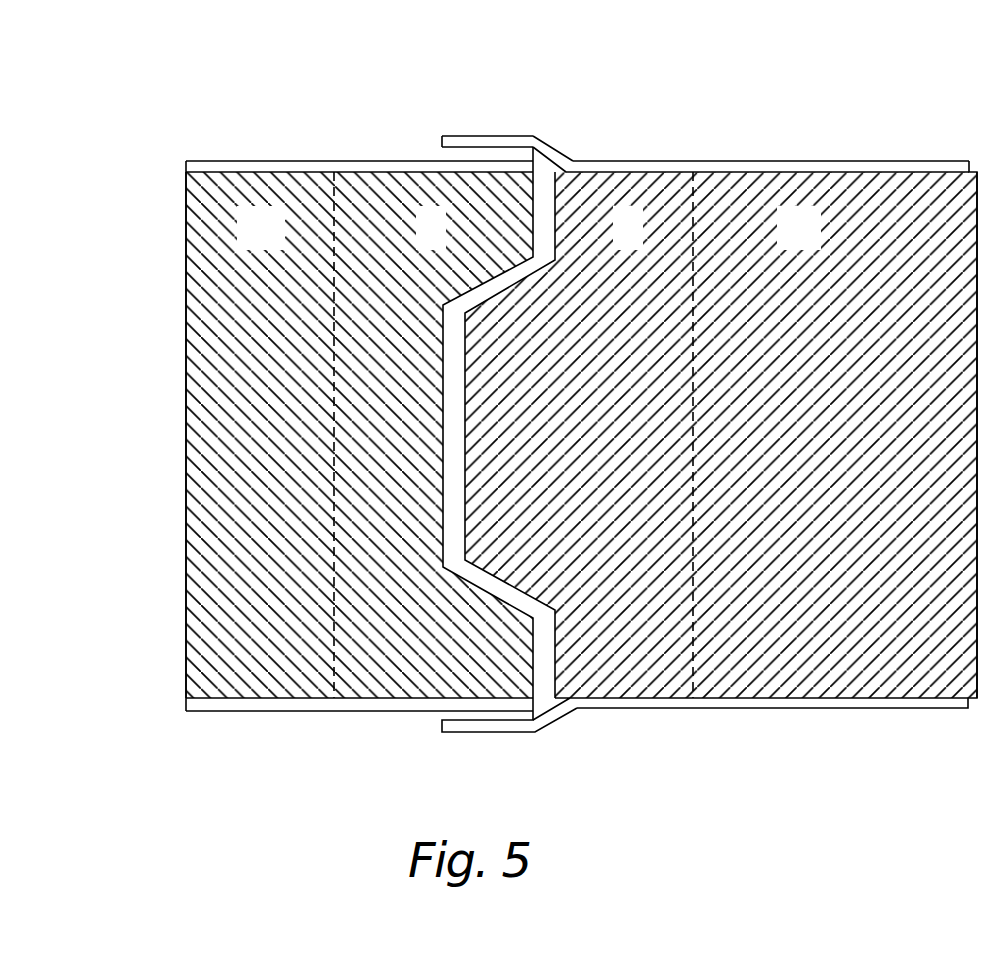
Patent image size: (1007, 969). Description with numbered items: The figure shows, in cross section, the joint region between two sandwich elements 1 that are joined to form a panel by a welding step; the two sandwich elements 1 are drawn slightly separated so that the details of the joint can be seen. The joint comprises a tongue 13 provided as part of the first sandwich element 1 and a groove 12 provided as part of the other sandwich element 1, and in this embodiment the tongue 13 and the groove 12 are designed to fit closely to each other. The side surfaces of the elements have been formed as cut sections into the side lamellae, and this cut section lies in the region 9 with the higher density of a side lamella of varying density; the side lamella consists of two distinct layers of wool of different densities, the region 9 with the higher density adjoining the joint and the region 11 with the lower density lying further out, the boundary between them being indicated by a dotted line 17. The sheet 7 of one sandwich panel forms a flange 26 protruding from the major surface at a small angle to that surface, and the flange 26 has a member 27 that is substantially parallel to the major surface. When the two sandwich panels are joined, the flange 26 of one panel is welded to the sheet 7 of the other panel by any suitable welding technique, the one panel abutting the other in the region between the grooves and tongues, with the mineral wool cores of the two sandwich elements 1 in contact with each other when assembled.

The sandwich element 1 is at (579, 440).
The sheet 7 is at (780, 158).
The region with the higher density 9 is at (443, 246).
The region with the lower density 11 is at (282, 246).
The groove 12 is at (443, 458).
The tongue 13 is at (465, 457).
The dotted line 17 is at (693, 622).
The flange 26 is at (564, 130).
The member 27 is at (474, 134).